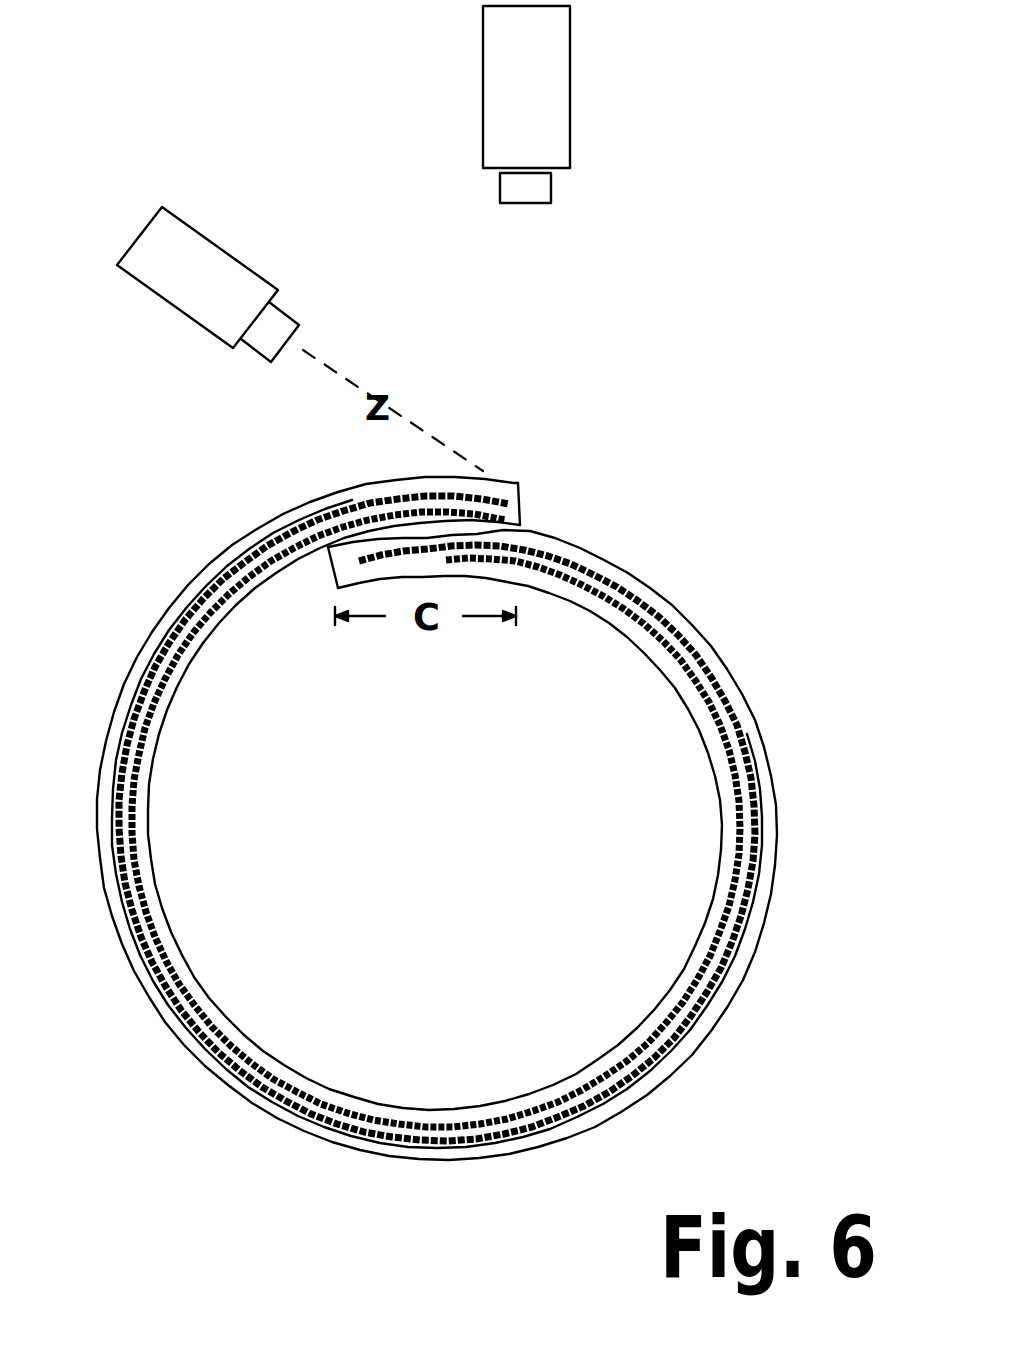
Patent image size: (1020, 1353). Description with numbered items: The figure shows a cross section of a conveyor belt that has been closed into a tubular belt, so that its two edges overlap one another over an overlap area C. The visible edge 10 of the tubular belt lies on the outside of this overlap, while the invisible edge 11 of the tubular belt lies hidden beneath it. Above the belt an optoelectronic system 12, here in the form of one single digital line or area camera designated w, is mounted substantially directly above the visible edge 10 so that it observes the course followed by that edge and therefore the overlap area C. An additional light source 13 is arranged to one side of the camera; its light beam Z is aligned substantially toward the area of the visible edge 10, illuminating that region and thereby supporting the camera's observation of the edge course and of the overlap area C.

The visible edge of tubular belt 10 is at (520, 501).
The invisible edge of tubular belt 11 is at (333, 548).
The optoelectronic system 12 is at (560, 57).
The light source 13 is at (163, 243).